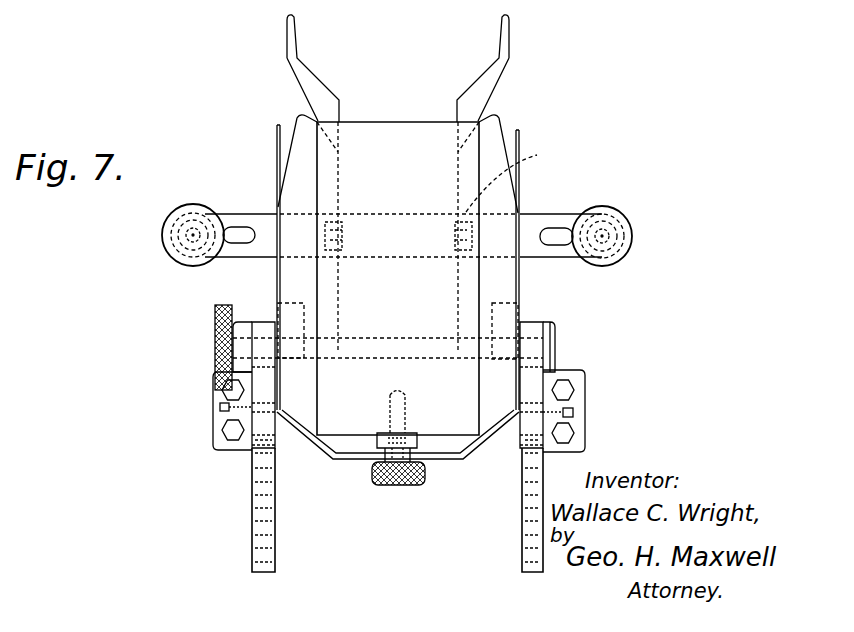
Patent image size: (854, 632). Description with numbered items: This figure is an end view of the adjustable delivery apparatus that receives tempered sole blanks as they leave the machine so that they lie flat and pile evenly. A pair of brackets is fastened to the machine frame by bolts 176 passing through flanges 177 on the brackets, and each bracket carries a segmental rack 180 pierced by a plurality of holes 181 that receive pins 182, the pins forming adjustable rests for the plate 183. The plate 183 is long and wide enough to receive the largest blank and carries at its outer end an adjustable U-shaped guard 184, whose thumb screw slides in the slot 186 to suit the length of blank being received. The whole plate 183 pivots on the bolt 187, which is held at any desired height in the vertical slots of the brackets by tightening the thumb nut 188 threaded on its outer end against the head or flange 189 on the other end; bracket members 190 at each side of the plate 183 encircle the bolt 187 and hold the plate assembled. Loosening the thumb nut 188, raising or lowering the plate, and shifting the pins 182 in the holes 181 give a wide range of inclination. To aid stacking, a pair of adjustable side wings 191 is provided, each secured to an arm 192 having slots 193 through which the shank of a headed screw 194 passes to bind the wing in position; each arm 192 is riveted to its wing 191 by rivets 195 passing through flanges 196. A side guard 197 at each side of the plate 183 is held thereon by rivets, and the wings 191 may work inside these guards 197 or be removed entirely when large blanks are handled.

The bolts 176 is at (226, 440).
The flanges 177 is at (214, 425).
The segmental rack 180 is at (258, 481).
The holes 181 is at (268, 517).
The pins 182 is at (221, 406).
The plate 183 is at (400, 130).
The U-shaped guard 184 is at (452, 442).
The slot 186 is at (386, 432).
The bolt 187 is at (233, 346).
The thumb nut 188 is at (215, 323).
The head or flange 189 is at (555, 330).
The bracket members 190 is at (278, 306).
The adjustable side wings 191 is at (300, 43).
The arm 192 is at (240, 214).
The slots 193 is at (240, 244).
The headed screw 194 is at (164, 247).
The rivets 195 is at (343, 236).
The flanges 196 is at (519, 178).
The side guard 197 is at (277, 130).